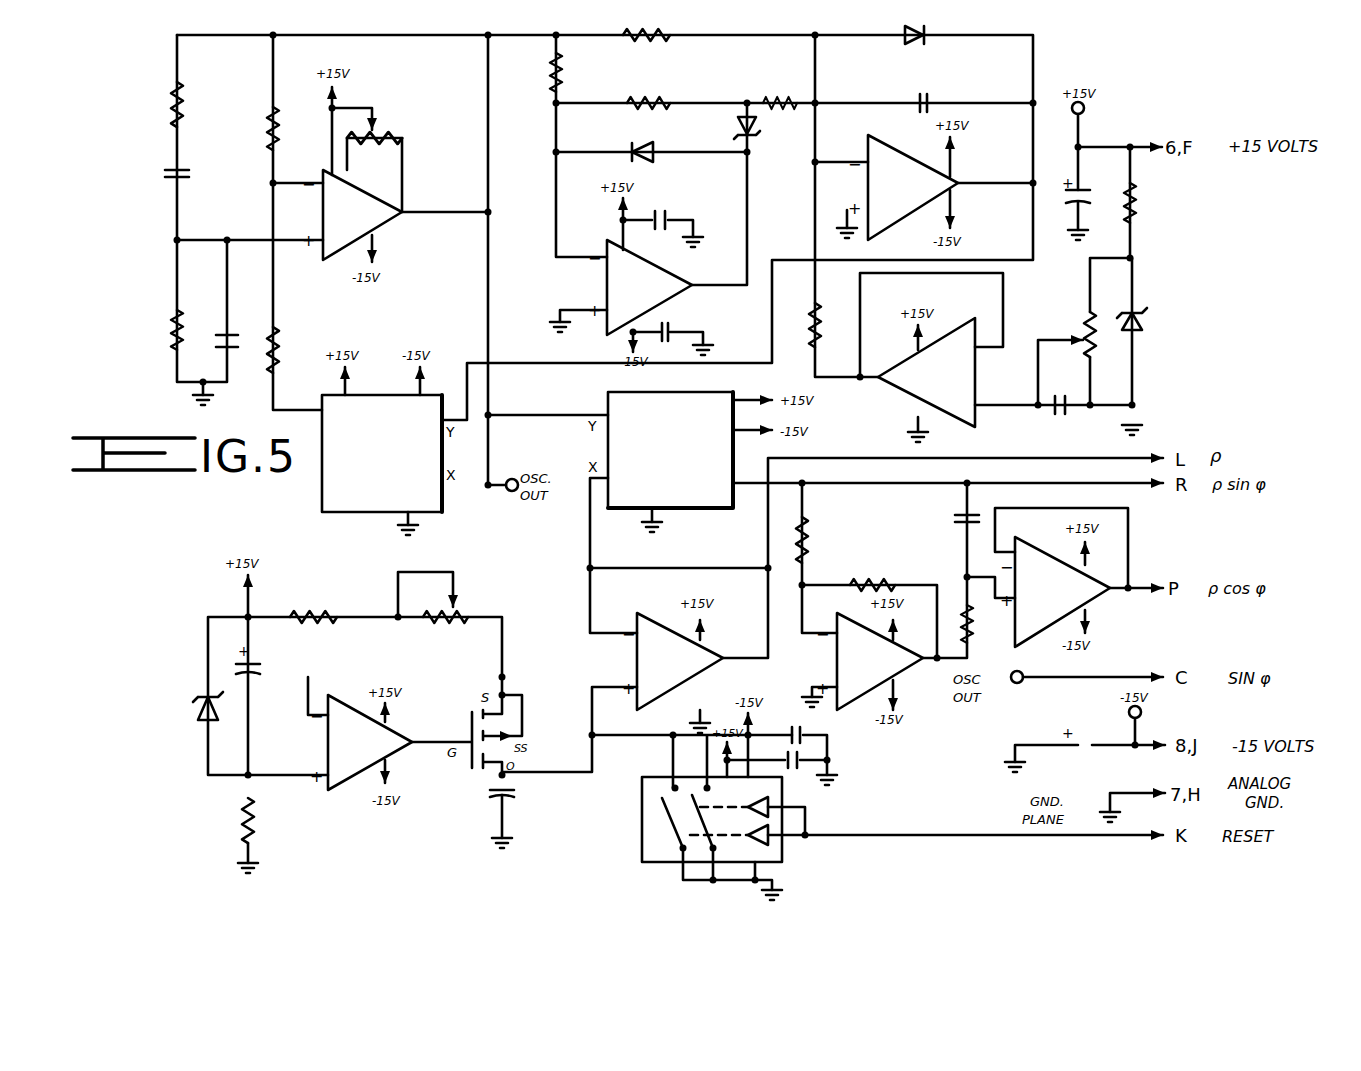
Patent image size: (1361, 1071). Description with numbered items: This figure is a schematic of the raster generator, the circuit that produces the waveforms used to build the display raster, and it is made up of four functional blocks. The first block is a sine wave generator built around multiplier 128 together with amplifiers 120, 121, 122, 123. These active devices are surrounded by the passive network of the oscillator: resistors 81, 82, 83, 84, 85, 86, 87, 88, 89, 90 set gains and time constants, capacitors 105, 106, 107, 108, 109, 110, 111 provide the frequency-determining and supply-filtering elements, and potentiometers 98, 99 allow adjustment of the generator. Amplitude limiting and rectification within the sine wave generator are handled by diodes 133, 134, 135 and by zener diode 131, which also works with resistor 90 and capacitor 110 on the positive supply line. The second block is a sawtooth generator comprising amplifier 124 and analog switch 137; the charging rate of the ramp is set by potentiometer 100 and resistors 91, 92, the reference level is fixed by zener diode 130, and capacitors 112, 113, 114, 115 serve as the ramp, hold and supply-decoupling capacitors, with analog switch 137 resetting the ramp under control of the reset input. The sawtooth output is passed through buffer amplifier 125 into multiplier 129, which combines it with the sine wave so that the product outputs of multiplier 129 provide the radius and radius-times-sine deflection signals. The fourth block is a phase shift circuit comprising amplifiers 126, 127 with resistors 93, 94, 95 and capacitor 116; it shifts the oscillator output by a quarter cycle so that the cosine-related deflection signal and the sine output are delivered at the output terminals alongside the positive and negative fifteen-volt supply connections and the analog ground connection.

The resistor 81 is at (183, 110).
The resistor 82 is at (262, 118).
The resistor 83 is at (168, 320).
The resistor 84 is at (290, 347).
The resistor 85 is at (566, 70).
The resistor 86 is at (658, 42).
The resistor 87 is at (648, 96).
The resistor 88 is at (780, 98).
The resistor 89 is at (807, 328).
The resistor 90 is at (1140, 203).
The resistor 91 is at (305, 606).
The resistor 92 is at (240, 821).
The resistor 93 is at (810, 542).
The resistor 94 is at (877, 580).
The resistor 95 is at (975, 624).
The potentiometer 98 is at (375, 128).
The potentiometer 99 is at (1080, 330).
The potentiometer 100 is at (460, 593).
The capacitor 105 is at (197, 178).
The capacitor 106 is at (245, 340).
The capacitor 107 is at (660, 218).
The capacitor 108 is at (685, 328).
The capacitor 109 is at (940, 94).
The capacitor 110 is at (1095, 196).
The capacitor 111 is at (1047, 414).
The capacitor 112 is at (262, 666).
The capacitor 113 is at (517, 796).
The capacitor 114 is at (810, 737).
The capacitor 115 is at (830, 760).
The capacitor 116 is at (955, 520).
The amplifier 120 is at (385, 225).
The amplifier 121 is at (685, 291).
The amplifier 122 is at (928, 133).
The amplifier 123 is at (905, 400).
The amplifier 124 is at (355, 788).
The buffer amplifier 125 is at (734, 664).
The amplifier 126 is at (905, 672).
The amplifier 127 is at (1115, 598).
The multiplier 128 is at (385, 512).
The multiplier 129 is at (606, 412).
The zener diode 130 is at (200, 705).
The zener diode 131 is at (1146, 322).
The diode 133 is at (642, 147).
The diode 134 is at (757, 148).
The diode 135 is at (933, 43).
The analog switch 137 is at (785, 850).